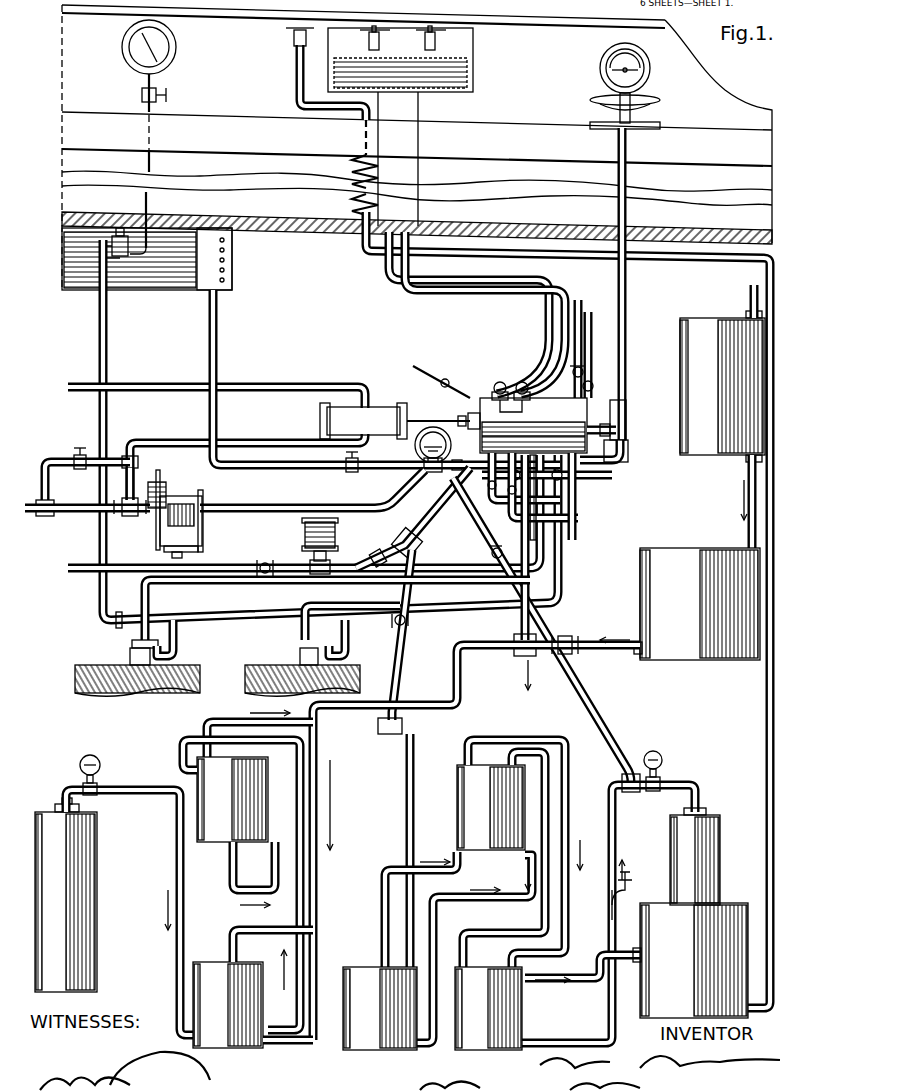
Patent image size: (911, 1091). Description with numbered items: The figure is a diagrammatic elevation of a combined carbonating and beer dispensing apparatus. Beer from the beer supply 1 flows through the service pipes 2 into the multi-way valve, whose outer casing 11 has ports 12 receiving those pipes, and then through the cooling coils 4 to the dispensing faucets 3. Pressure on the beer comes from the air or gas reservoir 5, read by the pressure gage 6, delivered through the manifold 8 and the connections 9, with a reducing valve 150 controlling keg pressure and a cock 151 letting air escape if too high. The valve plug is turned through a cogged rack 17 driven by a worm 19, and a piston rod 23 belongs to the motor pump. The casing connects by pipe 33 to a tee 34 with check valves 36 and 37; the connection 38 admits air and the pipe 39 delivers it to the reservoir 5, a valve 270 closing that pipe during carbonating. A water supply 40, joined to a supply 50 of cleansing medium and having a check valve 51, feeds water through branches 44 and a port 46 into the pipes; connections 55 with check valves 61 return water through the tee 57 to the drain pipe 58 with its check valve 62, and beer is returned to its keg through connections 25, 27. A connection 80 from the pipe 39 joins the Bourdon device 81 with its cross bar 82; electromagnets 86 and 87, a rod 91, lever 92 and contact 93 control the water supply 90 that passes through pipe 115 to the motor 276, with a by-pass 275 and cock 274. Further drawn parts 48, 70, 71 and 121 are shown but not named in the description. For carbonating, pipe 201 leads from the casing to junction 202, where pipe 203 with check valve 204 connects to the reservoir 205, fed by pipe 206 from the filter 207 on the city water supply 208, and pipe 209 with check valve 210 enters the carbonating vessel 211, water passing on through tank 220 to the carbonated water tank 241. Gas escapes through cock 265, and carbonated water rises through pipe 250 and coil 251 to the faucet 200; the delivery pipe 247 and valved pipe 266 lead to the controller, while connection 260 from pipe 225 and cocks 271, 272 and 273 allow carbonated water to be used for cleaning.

The beer supply 1 is at (94, 668).
The service pipes 2 is at (462, 284).
The dispensing faucets 3 is at (424, 40).
The cooling coils 4 is at (462, 92).
The air or carbonic acid gas reservoir 5 is at (158, 290).
The pressure gage 6 is at (170, 56).
The manifold 8 is at (240, 620).
The pressure connections 9 is at (176, 644).
The outer casing 11 is at (106, 360).
The ports 12 is at (533, 422).
The cogged rack 17 is at (626, 408).
The worm 19 is at (628, 444).
The piston rod 23 is at (466, 418).
The connections 25 is at (593, 349).
The connections 27 is at (574, 528).
The pipe 33 is at (533, 433).
The tee 34 is at (572, 508).
The check valve 36 is at (564, 488).
The check valve 37 is at (534, 496).
The connection 38 is at (551, 475).
The pipe 39 is at (282, 470).
The water supply 40 is at (78, 562).
The branches 44 is at (540, 372).
The port 46 is at (609, 56).
The gauge pointer 48 is at (606, 72).
The supply of cleansing medium 50 is at (338, 532).
The check valve 51 is at (266, 562).
The connections 55 is at (540, 352).
The tee 57 is at (458, 460).
The drain pipe 58 is at (441, 374).
The check valves 61 is at (494, 388).
The check valve 62 is at (456, 412).
The pipe 70 is at (632, 256).
The hand wheel 71 is at (652, 96).
The connection 80 is at (430, 474).
The Bourdon pressure indicating device 81 is at (312, 489).
The cross bar 82 is at (424, 446).
The electromagnet 86 is at (166, 482).
The electromagnet 87 is at (188, 504).
The water supply 90 is at (87, 497).
The rod 91 is at (140, 520).
The lever 92 is at (328, 610).
The contact 93 is at (184, 556).
The pipe 115 is at (266, 443).
The pipe 121 is at (264, 387).
The reducing valve 150 is at (110, 243).
The cock 151 is at (168, 95).
The carbonated water faucet 200 is at (321, 91).
The pipe 201 is at (492, 550).
The connection 202 is at (536, 640).
The pipe 203 is at (610, 650).
The check valve 204 is at (560, 656).
The reservoir 205 is at (680, 548).
The pipe 206 is at (750, 501).
The filter 207 is at (690, 342).
The city water supply 208 is at (749, 301).
The pipe 209 is at (456, 680).
The check valve 210 is at (488, 672).
The carbonating vessel 211 is at (206, 972).
The carbonating tank 220 is at (218, 832).
The pipe 225 is at (408, 800).
The carbonated water tank 241 is at (648, 1022).
The delivery pipe 247 is at (618, 856).
The pipe 250 is at (768, 708).
The coil 251 is at (378, 170).
The valved carbonated water connection 260 is at (400, 652).
The cock 265 is at (612, 904).
The valved pipe 266 is at (624, 750).
The valve 270 is at (350, 472).
The cock 271 is at (410, 620).
The cock 272 is at (395, 540).
The cock 273 is at (500, 562).
The cock 274 is at (80, 446).
The by-pass 275 is at (46, 466).
The motor 276 is at (368, 404).